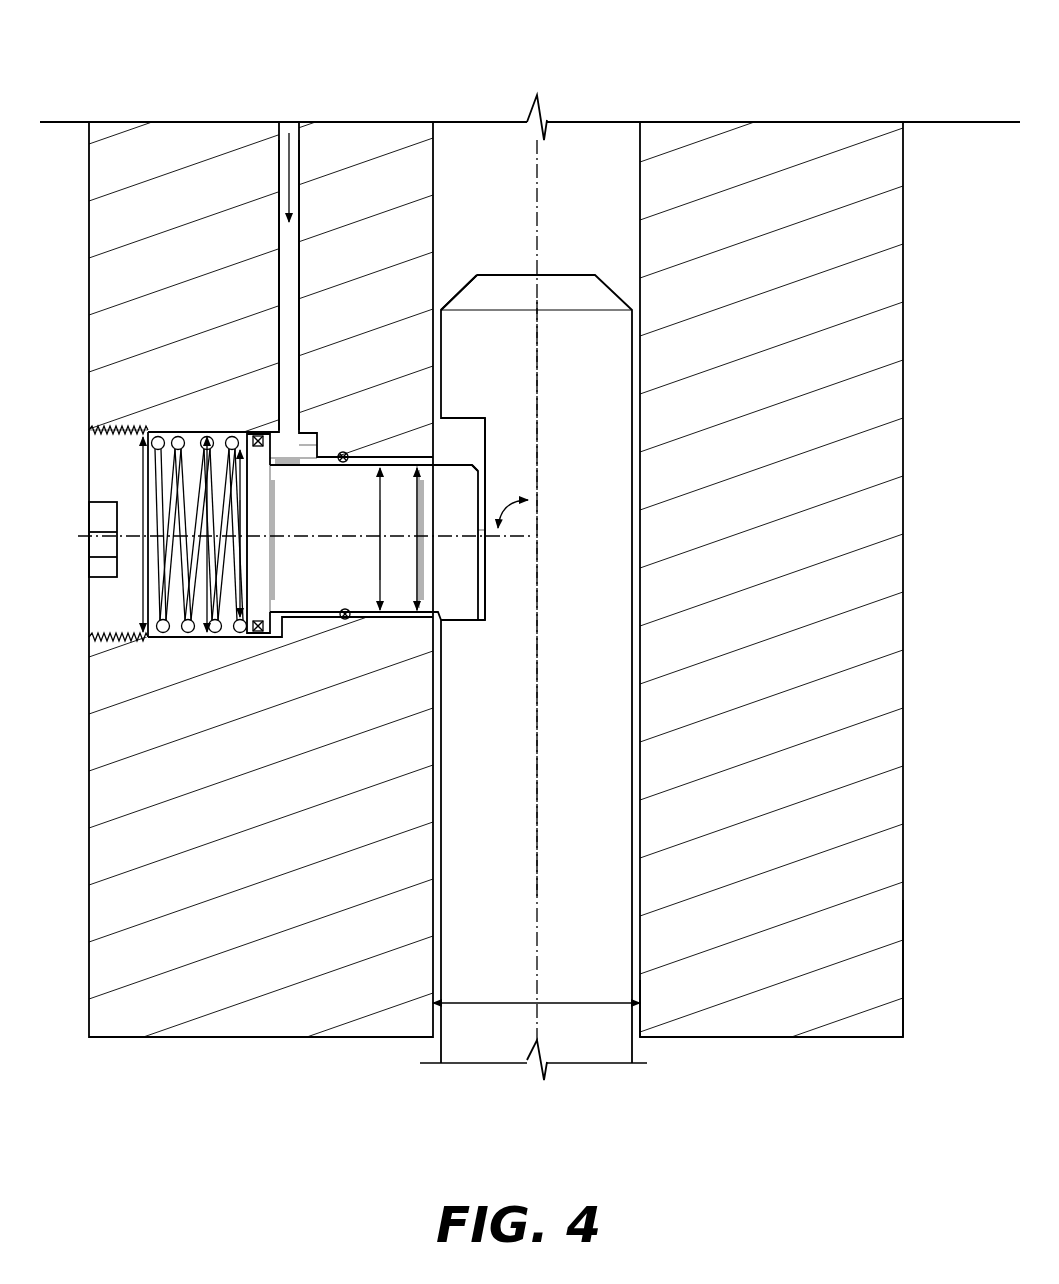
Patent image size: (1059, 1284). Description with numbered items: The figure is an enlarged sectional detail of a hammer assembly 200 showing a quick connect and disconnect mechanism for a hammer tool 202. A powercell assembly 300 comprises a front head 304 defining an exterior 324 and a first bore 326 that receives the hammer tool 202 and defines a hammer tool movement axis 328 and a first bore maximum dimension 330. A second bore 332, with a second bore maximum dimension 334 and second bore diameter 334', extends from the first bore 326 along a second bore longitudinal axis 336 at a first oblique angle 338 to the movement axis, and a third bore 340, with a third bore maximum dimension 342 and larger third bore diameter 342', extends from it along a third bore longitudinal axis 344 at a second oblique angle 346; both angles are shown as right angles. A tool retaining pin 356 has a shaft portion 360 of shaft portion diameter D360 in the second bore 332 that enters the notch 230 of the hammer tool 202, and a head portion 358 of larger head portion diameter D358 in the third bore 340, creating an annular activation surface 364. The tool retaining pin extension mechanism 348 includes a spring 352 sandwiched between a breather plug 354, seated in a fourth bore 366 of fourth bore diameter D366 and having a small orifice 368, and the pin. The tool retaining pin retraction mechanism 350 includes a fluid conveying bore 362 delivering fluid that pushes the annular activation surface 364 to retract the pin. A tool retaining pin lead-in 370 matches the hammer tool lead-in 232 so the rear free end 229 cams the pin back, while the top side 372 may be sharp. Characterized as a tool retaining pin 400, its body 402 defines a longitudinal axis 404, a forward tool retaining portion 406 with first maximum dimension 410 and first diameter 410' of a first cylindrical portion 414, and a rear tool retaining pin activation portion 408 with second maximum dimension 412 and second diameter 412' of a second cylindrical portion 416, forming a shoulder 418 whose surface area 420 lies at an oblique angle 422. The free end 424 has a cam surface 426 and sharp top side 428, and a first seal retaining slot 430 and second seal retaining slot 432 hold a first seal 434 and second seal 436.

The hammer assembly 200 is at (533, 564).
The hammer tool 202 is at (455, 1053).
The rear free end 229 is at (568, 275).
The notch 230 is at (452, 432).
The hammer tool lead-in 232 is at (450, 300).
The powercell assembly 300 is at (688, 105).
The front head 304 is at (763, 1027).
The exterior 324 is at (893, 1000).
The first bore 326 is at (634, 1022).
The hammer tool movement axis 328 is at (537, 195).
The first bore maximum dimension 330 is at (610, 1003).
The second bore 332 is at (343, 451).
The second bore maximum dimension 334 is at (470, 386).
The second bore diameter 334' is at (456, 668).
The second bore longitudinal axis 336 is at (455, 538).
The first oblique angle 338 is at (553, 515).
The third bore 340 is at (273, 430).
The third bore maximum dimension 342 is at (146, 426).
The third bore diameter 342' is at (132, 508).
The third bore longitudinal axis 344 is at (181, 583).
The second oblique angle 346 is at (518, 530).
The tool retaining pin extension mechanism 348 is at (160, 640).
The tool retaining pin retraction mechanism 350 is at (303, 447).
The spring 352 is at (188, 640).
The breather plug 354 is at (92, 534).
The tool retaining pin 356 is at (383, 530).
The head portion 358 is at (278, 640).
The shaft portion 360 is at (482, 492).
The fluid conveying bore 362 is at (287, 257).
The annular activation surface 364 is at (278, 460).
The fourth bore 366 is at (118, 430).
The small orifice 368 is at (130, 533).
The tool retaining pin lead-in 370 is at (463, 620).
The top side 372 is at (460, 463).
The tool retaining pin 400 is at (381, 466).
The body 402 is at (404, 473).
The longitudinal axis 404 is at (517, 540).
The forward tool retaining portion 406 is at (487, 487).
The rear tool retaining pin activation portion 408 is at (294, 619).
The first maximum dimension 410 is at (457, 640).
The first diameter 410' is at (458, 651).
The second maximum dimension 412 is at (390, 530).
The second diameter 412' is at (191, 432).
The first cylindrical portion 414 is at (555, 515).
The second cylindrical portion 416 is at (292, 632).
The shoulder 418 is at (333, 350).
The surface area 420 is at (333, 364).
The oblique angle 422 is at (330, 376).
The free end 424 is at (479, 480).
The cam surface 426 is at (506, 563).
The sharp top side 428 is at (544, 399).
The first seal retaining slot 430 is at (412, 614).
The second seal retaining slot 432 is at (250, 480).
The first seal 434 is at (340, 619).
The second seal 436 is at (259, 640).
The head portion diameter D358 is at (240, 450).
The shaft portion diameter D360 is at (417, 625).
The fourth bore diameter D366 is at (140, 478).